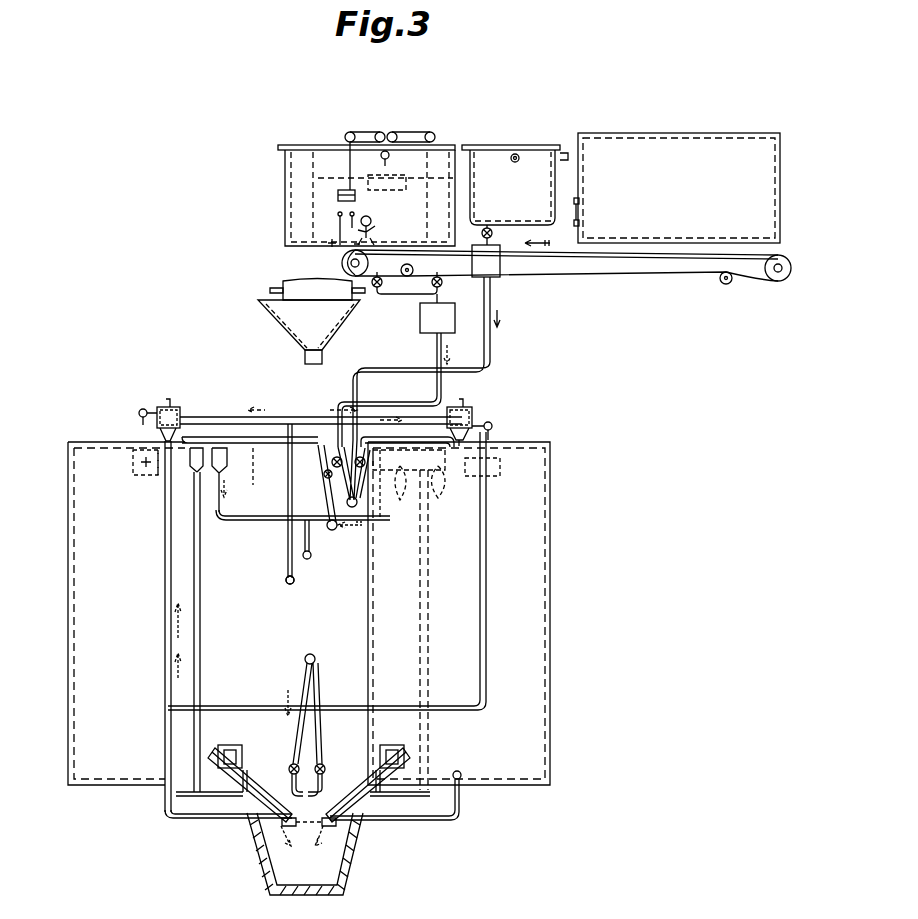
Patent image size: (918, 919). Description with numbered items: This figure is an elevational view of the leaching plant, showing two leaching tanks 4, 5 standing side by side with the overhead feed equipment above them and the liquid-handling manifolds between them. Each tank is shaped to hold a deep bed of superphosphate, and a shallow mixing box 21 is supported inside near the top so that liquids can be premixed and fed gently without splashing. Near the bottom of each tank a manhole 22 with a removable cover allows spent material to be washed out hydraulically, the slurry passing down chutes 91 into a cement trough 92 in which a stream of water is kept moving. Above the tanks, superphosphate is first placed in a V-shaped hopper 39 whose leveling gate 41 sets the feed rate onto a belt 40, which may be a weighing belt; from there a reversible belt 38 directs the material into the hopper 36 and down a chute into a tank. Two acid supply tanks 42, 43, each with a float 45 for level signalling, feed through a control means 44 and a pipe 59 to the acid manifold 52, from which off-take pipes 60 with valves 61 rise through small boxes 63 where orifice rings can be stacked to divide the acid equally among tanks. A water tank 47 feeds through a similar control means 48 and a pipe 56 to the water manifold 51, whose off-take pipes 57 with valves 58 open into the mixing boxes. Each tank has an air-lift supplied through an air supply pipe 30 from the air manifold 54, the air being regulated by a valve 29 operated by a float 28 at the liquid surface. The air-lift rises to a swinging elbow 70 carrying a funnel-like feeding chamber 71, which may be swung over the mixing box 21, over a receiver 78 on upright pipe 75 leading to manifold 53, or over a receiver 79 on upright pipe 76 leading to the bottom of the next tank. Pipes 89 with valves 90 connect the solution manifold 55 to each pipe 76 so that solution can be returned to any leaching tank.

The leaching tank 4 is at (550, 580).
The leaching tank 5 is at (68, 590).
The shallow box 21 is at (160, 478).
The manhole 22 is at (228, 746).
The float 28 is at (135, 455).
The valve 29 is at (142, 411).
The air supply pipe 30 is at (220, 416).
The hopper 36 is at (282, 320).
The reversible belt 38 is at (283, 276).
The V-shaped hopper 39 is at (672, 128).
The belt 40 is at (780, 257).
The leveling gate 41 is at (584, 196).
The acid supply tank 42 is at (318, 189).
The acid supply tank 43 is at (288, 226).
The control means 44 is at (466, 300).
The float 45 is at (368, 221).
The water tank 47 is at (542, 148).
The control means 48 is at (500, 272).
The manifold 51 is at (358, 500).
The manifold 52 is at (336, 530).
The manifold 53 is at (311, 559).
The manifold 54 is at (301, 594).
The manifold 55 is at (315, 660).
The pipe 56 is at (493, 346).
The off-take pipe 57 is at (407, 456).
The valve 58 is at (333, 464).
The pipe 59 is at (436, 353).
The off-take pipe 60 is at (200, 398).
The valve 61 is at (326, 476).
The small box 63 is at (178, 408).
The swinging elbow 70 is at (164, 690).
The feeding chamber 71 is at (166, 402).
The upright pipe 75 is at (277, 520).
The upright pipe 76 is at (200, 582).
The funnel-shaped receiver 78 is at (222, 461).
The funnel-shaped receiver 79 is at (198, 470).
The pipe 89 is at (312, 742).
The valve 90 is at (290, 767).
The chute 91 is at (248, 815).
The cement trough 92 is at (353, 865).